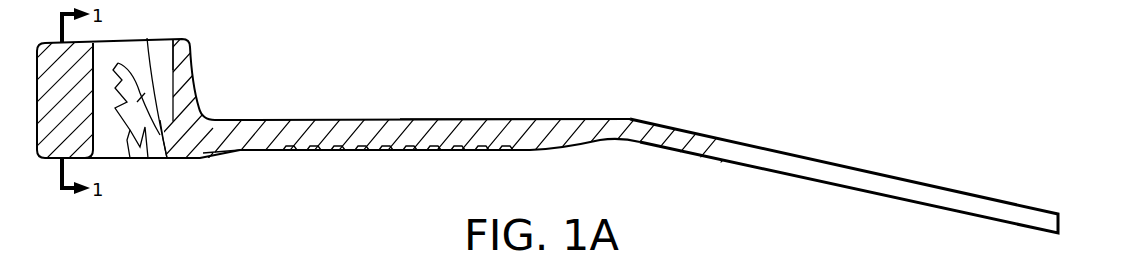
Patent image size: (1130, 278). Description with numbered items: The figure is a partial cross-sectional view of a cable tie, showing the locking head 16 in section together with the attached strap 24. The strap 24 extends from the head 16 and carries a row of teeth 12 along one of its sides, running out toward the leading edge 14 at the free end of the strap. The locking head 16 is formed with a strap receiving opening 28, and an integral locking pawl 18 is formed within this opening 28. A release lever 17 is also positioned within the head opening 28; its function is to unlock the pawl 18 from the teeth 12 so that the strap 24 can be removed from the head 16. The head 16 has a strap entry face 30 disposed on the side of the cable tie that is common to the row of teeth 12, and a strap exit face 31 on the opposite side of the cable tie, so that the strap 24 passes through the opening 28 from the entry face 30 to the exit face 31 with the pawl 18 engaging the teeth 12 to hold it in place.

The row of teeth 12 is at (330, 150).
The leading edge 14 is at (1062, 226).
The locking head 16 is at (187, 78).
The release lever 17 is at (148, 40).
The locking pawl 18 is at (117, 63).
The strap 24 is at (455, 124).
The strap receiving opening 28 is at (168, 55).
The strap entry face 30 is at (162, 158).
The strap exit face 31 is at (96, 63).